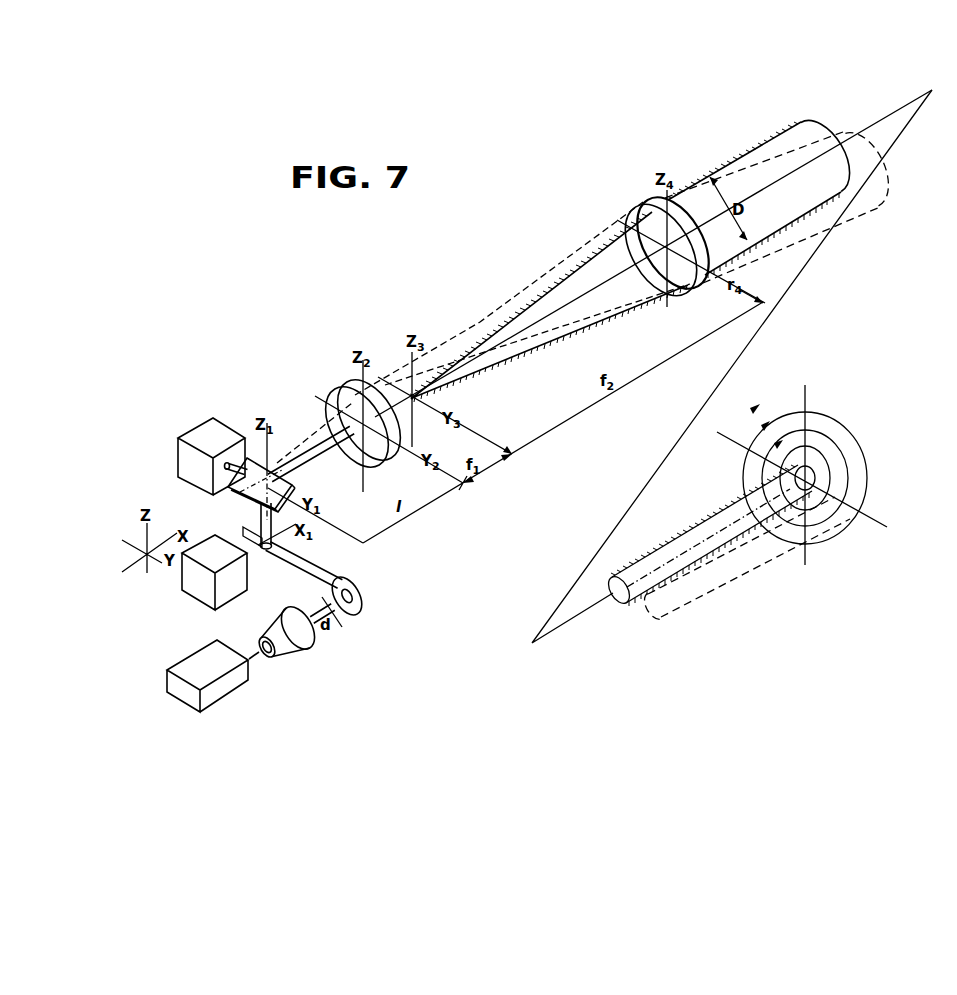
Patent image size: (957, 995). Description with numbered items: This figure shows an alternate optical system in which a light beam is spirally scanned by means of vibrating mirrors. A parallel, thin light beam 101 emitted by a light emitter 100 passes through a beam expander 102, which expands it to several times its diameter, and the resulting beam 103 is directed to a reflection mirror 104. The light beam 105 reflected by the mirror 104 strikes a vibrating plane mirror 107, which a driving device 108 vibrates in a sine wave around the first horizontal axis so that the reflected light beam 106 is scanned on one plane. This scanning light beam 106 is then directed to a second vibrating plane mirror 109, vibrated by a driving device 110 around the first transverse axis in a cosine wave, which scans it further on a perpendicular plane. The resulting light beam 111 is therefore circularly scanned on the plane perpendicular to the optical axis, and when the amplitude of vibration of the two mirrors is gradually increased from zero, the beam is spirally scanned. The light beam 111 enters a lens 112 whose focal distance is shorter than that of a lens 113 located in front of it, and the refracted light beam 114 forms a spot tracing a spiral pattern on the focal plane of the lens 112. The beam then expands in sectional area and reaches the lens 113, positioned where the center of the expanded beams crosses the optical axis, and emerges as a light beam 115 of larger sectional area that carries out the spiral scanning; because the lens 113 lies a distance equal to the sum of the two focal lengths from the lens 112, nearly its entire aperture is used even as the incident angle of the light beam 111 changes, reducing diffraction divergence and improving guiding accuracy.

The light emitter 100 is at (167, 670).
The light beam 101 is at (260, 648).
The beam expander 102 is at (292, 643).
The light beam 103 is at (318, 604).
The reflection mirror 104 is at (360, 591).
The light beam 105 is at (289, 563).
The scanning light beam 106 is at (260, 517).
The vibrating plane mirror 107 is at (285, 546).
The driving device 108 is at (193, 597).
The vibrating plane mirror 109 is at (247, 458).
The driving device 110 is at (178, 452).
The light beam 111 is at (328, 456).
The lens 112 is at (338, 396).
The lens 113 is at (650, 207).
The light beam 114 is at (405, 405).
The light beam 115 is at (728, 168).